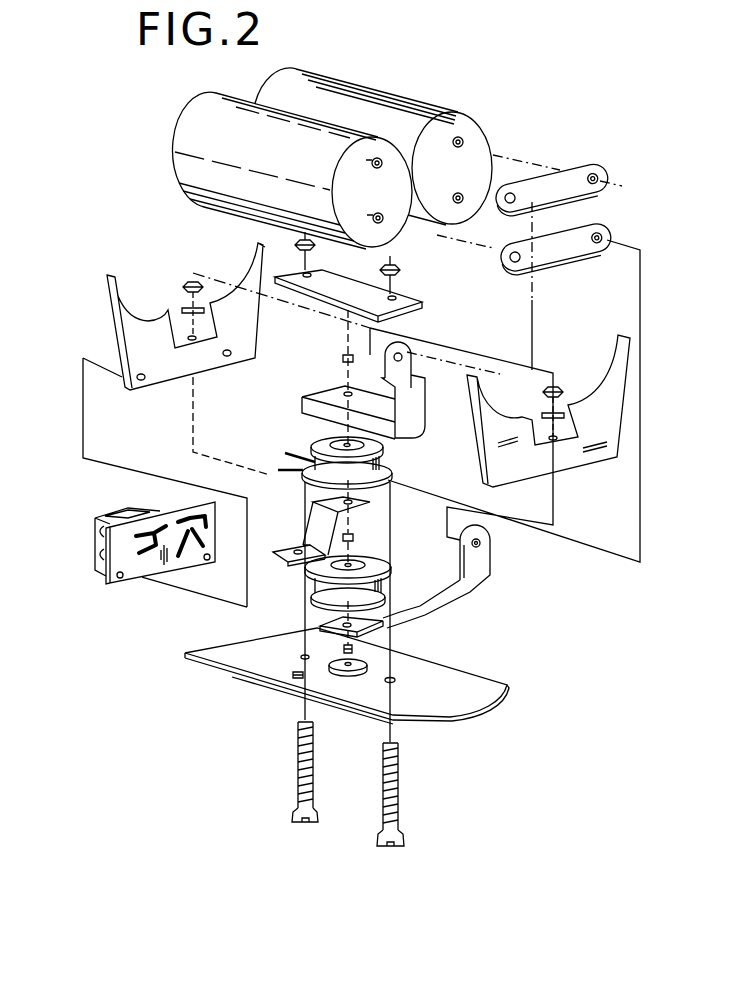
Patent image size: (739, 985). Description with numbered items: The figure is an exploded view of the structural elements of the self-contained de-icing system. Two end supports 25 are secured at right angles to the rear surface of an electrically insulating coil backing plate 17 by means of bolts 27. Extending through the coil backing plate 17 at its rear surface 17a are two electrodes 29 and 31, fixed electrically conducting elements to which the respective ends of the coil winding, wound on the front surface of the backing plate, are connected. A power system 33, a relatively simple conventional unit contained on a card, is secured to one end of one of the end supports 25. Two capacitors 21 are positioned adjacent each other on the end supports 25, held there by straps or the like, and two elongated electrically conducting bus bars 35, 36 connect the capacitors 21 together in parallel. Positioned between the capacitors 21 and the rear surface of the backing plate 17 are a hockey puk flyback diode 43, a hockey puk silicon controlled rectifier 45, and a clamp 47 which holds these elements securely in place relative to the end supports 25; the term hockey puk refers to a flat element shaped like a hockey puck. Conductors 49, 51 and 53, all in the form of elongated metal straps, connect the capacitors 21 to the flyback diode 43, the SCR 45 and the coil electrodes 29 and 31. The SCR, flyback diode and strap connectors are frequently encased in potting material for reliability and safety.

The coil backing plate 17 is at (363, 675).
The rear surface of coil backing plate 17a is at (440, 680).
The capacitors 21 is at (205, 208).
The end supports 25 is at (115, 307).
The bolts 27 is at (380, 792).
The electrode 29 is at (365, 662).
The electrode 31 is at (296, 684).
The power system 33 is at (90, 572).
The bus bar 35 is at (572, 190).
The bus bar 36 is at (600, 232).
The hockey puk flyback diode 43 is at (385, 572).
The hockey puk silicon controlled rectifier 45 is at (395, 469).
The clamp 47 is at (420, 306).
The conductor 49 is at (410, 392).
The conductor 51 is at (313, 527).
The conductor 53 is at (483, 563).